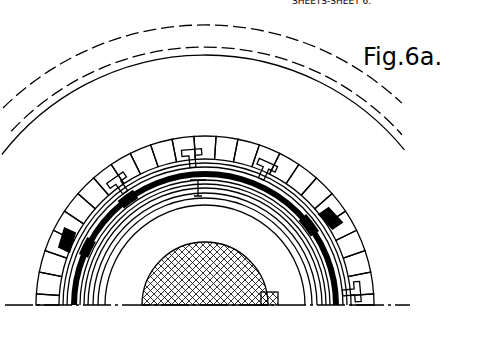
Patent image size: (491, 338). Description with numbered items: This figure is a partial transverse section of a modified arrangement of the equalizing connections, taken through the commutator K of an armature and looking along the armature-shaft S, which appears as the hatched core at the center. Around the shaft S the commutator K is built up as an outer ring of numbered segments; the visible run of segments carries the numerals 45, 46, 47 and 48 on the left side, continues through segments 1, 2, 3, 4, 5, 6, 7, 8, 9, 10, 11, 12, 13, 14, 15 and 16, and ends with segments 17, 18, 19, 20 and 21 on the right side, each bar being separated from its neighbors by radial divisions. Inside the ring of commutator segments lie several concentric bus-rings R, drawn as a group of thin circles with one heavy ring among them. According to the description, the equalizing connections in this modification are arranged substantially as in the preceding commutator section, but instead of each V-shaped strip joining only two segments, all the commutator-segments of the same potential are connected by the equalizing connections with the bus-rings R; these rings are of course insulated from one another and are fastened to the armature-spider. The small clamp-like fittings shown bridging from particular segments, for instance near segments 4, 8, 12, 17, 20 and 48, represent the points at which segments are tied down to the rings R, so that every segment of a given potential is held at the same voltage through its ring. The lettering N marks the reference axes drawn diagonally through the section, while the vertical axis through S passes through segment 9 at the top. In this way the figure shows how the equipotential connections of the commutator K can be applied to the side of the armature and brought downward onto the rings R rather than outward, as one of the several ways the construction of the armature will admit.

The commutator segment 1 is at (62, 222).
The commutator segment 2 is at (73, 204).
The commutator segment 3 is at (88, 188).
The commutator segment 4 is at (104, 173).
The commutator segment 5 is at (121, 161).
The commutator segment 6 is at (141, 152).
The commutator segment 7 is at (162, 144).
The commutator segment 8 is at (183, 140).
The commutator segment 9 is at (205, 140).
The commutator segment 10 is at (226, 140).
The commutator segment 11 is at (248, 145).
The commutator segment 12 is at (269, 151).
The commutator segment 13 is at (288, 161).
The commutator segment 14 is at (306, 172).
The commutator segment 15 is at (323, 187).
The commutator segment 16 is at (337, 204).
The commutator segment 17 is at (350, 221).
The commutator segment 18 is at (359, 241).
The commutator segment 19 is at (366, 262).
The commutator segment 20 is at (370, 283).
The commutator segment 21 is at (371, 300).
The commutator segment 45 is at (41, 301).
The commutator segment 46 is at (40, 283).
The commutator segment 47 is at (44, 262).
The commutator segment 48 is at (51, 241).
The armature-shaft S is at (203, 240).
The north pole axis N is at (138, 266).
The bus-rings R is at (133, 188).
The commutator K is at (250, 143).